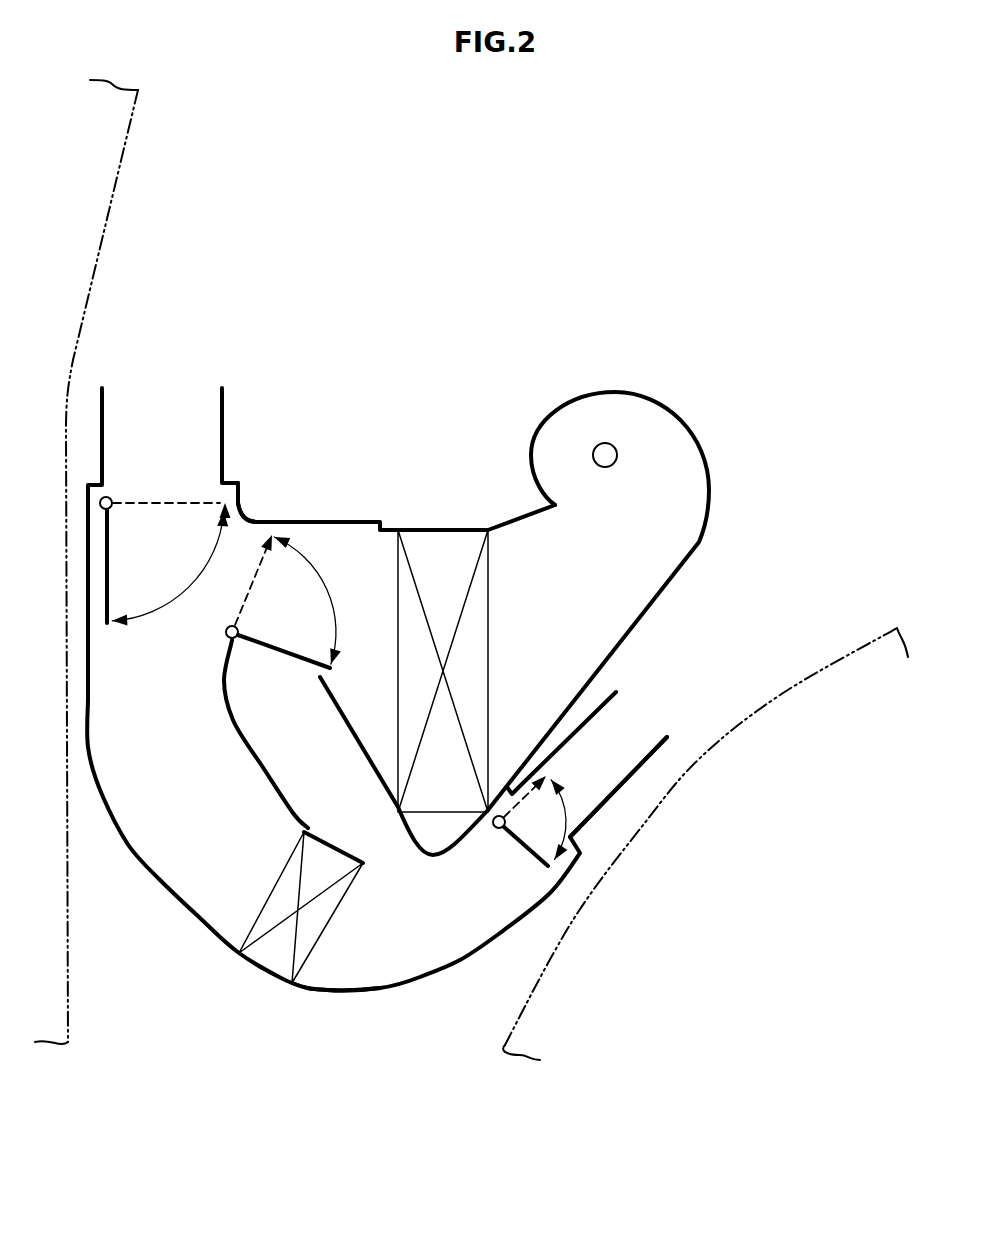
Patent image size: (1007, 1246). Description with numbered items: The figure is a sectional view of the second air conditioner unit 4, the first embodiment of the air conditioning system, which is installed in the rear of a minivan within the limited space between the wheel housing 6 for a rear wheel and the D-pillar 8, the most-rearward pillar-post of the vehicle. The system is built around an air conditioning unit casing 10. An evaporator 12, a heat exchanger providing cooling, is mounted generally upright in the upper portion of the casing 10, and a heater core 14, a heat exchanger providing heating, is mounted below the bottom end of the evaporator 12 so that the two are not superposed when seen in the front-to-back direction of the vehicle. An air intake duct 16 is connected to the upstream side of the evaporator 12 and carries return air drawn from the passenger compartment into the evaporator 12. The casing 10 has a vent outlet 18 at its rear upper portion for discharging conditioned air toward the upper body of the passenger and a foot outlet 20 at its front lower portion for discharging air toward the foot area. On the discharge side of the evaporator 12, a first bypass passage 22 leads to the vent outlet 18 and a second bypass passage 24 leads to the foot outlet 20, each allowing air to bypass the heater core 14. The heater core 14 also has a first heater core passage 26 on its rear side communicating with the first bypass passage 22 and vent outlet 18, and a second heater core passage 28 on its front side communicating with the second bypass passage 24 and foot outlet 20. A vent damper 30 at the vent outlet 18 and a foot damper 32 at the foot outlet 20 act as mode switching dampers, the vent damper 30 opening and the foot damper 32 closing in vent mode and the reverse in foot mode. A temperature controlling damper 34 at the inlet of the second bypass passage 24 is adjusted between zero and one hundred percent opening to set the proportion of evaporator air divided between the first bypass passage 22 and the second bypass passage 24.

The second air conditioner unit 4 is at (392, 462).
The wheel housing 6 is at (805, 673).
The D-pillar 8 is at (82, 325).
The air conditioning unit casing 10 is at (450, 967).
The evaporator 12 is at (487, 597).
The heater core 14 is at (257, 917).
The air intake duct 16 is at (709, 488).
The vent outlet 18 is at (200, 427).
The foot outlet 20 is at (540, 823).
The first bypass passage 22 is at (247, 545).
The second bypass passage 24 is at (307, 728).
The first heater core passage 26 is at (152, 808).
The second heater core passage 28 is at (353, 965).
The vent damper 30 is at (108, 558).
The foot damper 32 is at (530, 857).
The temperature controlling damper 34 is at (273, 640).